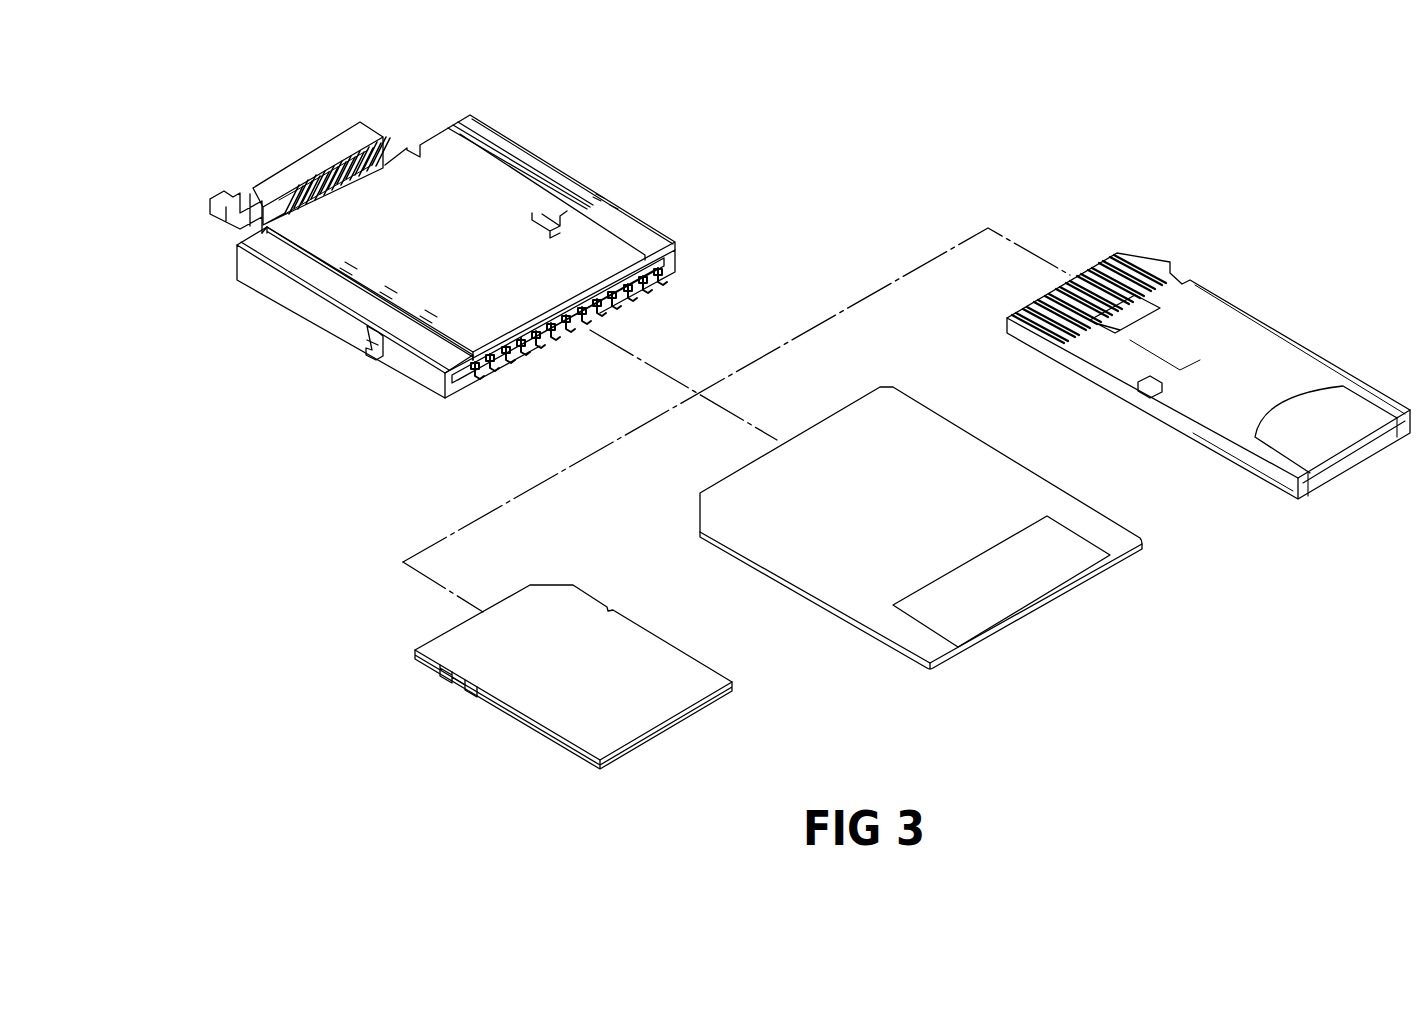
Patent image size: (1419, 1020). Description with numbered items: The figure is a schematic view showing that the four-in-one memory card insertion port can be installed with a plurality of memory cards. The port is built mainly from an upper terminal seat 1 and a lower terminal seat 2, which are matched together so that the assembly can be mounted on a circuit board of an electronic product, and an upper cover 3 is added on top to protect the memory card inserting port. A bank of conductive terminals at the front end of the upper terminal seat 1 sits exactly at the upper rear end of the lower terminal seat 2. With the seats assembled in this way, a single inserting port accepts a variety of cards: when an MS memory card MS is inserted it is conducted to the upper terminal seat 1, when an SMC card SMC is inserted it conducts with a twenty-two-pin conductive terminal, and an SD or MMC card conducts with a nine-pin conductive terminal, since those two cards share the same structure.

The upper terminal seat 1 is at (216, 170).
The lower terminal seat 2 is at (310, 325).
The upper cover 3 is at (445, 157).
The SMC memory card SMC is at (1013, 598).
The MS memory card MS is at (1333, 443).